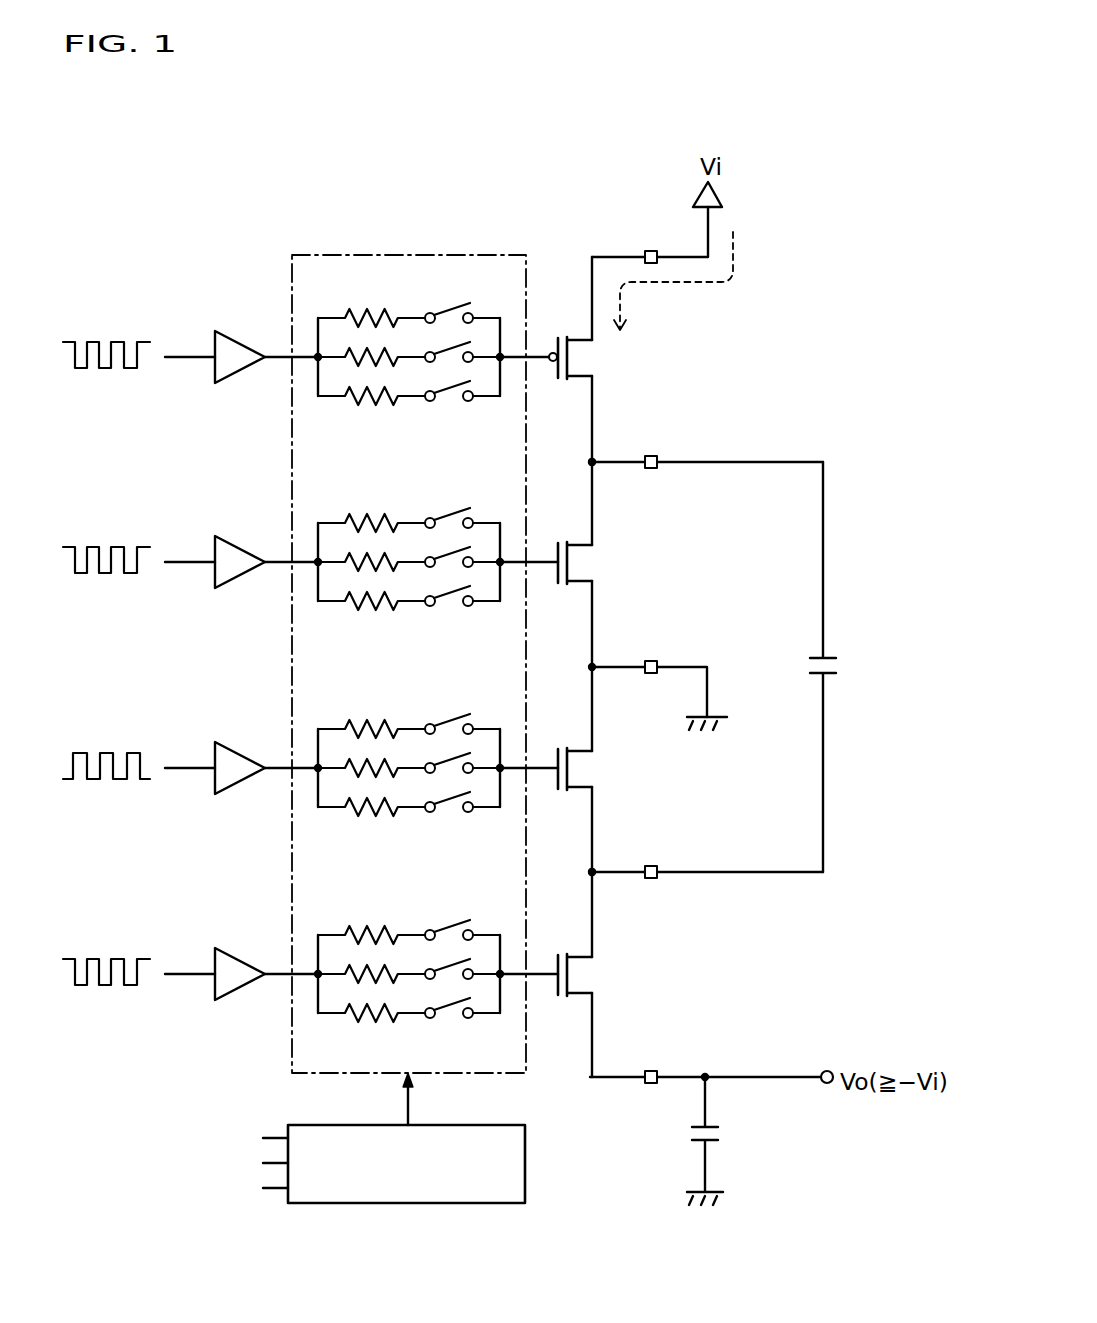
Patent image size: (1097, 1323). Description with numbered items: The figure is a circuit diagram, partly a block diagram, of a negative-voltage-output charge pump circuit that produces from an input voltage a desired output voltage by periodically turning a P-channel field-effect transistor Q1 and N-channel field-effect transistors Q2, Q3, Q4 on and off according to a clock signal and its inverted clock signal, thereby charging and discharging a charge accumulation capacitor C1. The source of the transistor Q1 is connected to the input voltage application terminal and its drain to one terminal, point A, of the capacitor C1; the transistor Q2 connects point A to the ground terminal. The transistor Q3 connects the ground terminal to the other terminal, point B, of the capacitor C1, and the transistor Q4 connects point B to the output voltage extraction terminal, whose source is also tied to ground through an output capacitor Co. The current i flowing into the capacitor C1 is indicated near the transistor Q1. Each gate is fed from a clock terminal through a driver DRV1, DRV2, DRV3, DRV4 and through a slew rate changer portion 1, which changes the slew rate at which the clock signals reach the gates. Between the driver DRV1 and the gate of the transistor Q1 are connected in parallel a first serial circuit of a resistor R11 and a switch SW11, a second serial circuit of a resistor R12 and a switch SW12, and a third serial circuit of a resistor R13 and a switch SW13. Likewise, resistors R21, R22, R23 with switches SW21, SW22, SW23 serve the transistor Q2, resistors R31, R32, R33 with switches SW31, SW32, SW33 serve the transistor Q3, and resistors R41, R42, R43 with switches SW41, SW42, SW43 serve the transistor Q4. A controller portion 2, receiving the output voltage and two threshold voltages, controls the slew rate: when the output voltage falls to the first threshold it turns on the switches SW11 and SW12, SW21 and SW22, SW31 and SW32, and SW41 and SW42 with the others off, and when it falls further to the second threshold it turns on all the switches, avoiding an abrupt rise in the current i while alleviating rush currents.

The slew rate changer portion 1 is at (413, 254).
The controller portion 2 is at (464, 1125).
The P-channel field-effect transistor Q1 is at (594, 358).
The N-channel field-effect transistor Q2 is at (599, 563).
The N-channel field-effect transistor Q3 is at (599, 769).
The N-channel field-effect transistor Q4 is at (599, 975).
The charge accumulation capacitor C1 is at (845, 667).
The output capacitor Co is at (725, 1141).
The point A is at (583, 462).
The point B is at (583, 872).
The current i is at (682, 281).
The driver DRV1 is at (238, 370).
The driver DRV2 is at (238, 575).
The driver DRV3 is at (238, 781).
The driver DRV4 is at (238, 987).
The resistor R11 is at (373, 307).
The resistor R12 is at (342, 353).
The resistor R13 is at (374, 410).
The resistor R21 is at (373, 512).
The resistor R22 is at (342, 558).
The resistor R23 is at (374, 615).
The resistor R31 is at (373, 718).
The resistor R32 is at (342, 764).
The resistor R33 is at (374, 821).
The resistor R41 is at (373, 924).
The resistor R42 is at (342, 970).
The resistor R43 is at (374, 1027).
The switch SW11 is at (448, 305).
The switch SW12 is at (474, 349).
The switch SW13 is at (450, 410).
The switch SW21 is at (448, 510).
The switch SW22 is at (474, 554).
The switch SW23 is at (450, 615).
The switch SW31 is at (448, 716).
The switch SW32 is at (474, 760).
The switch SW33 is at (450, 821).
The switch SW41 is at (448, 922).
The switch SW42 is at (474, 966).
The switch SW43 is at (450, 1027).